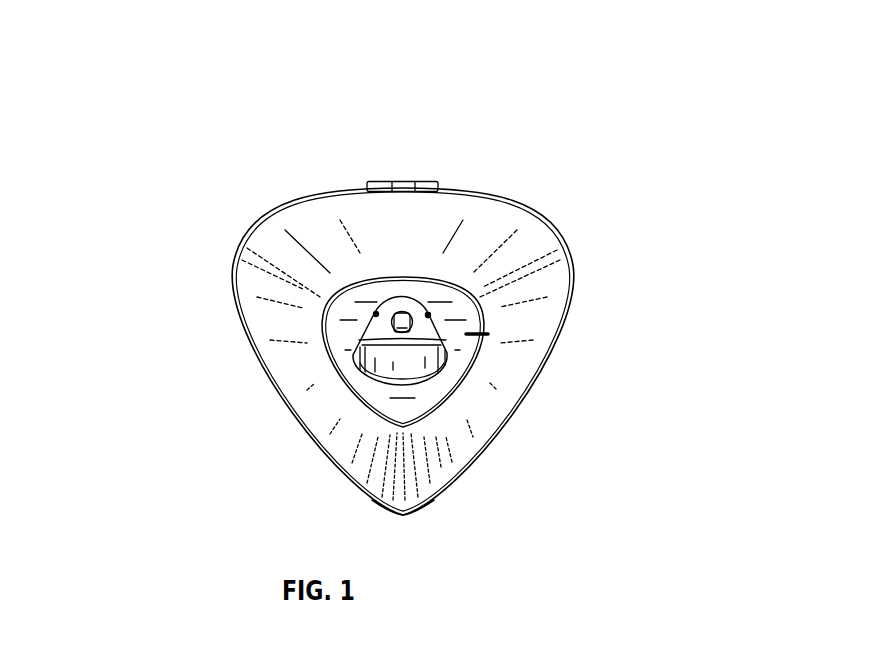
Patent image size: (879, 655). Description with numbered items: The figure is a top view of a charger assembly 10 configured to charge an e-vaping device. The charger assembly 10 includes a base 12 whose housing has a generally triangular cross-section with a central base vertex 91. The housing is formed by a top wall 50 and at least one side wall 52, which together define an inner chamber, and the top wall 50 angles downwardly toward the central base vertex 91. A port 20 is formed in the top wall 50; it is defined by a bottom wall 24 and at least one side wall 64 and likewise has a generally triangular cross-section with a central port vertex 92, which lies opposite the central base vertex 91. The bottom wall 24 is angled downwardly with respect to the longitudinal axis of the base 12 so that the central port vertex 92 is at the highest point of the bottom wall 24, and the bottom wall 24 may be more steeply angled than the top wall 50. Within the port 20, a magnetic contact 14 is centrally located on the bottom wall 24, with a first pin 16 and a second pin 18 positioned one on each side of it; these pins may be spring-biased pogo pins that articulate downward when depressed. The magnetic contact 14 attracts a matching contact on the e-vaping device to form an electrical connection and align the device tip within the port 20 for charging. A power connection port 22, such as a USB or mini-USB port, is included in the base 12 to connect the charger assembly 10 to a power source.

The charger assembly 10 is at (278, 402).
The base 12 is at (277, 345).
The magnetic contact 14 is at (405, 312).
The first pin 16 is at (376, 314).
The second pin 18 is at (428, 315).
The port 20 is at (478, 333).
The power connection port 22 is at (407, 182).
The bottom wall 24 is at (433, 340).
The top wall 50 is at (410, 404).
The side wall 52 is at (470, 448).
The side wall 64 is at (420, 363).
The central base vertex 91 is at (407, 515).
The central port vertex 92 is at (428, 315).